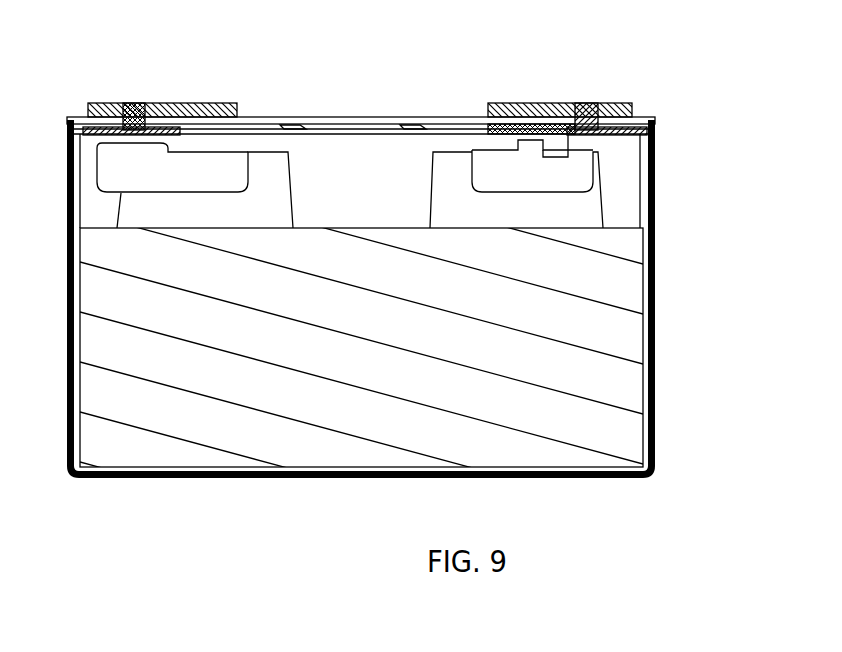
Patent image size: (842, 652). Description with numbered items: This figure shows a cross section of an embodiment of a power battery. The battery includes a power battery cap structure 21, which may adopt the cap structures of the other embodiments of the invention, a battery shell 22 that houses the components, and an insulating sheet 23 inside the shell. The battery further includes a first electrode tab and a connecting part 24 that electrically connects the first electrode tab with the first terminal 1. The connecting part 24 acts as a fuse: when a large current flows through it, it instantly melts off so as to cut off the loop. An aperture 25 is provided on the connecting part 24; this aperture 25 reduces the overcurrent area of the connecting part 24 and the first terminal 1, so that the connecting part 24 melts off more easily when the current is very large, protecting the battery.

The first terminal 1 is at (599, 71).
The power battery cap structure 21 is at (361, 76).
The battery shell 22 is at (413, 281).
The insulating sheet 23 is at (417, 363).
The connecting part 24 is at (350, 136).
The aperture 25 is at (567, 92).